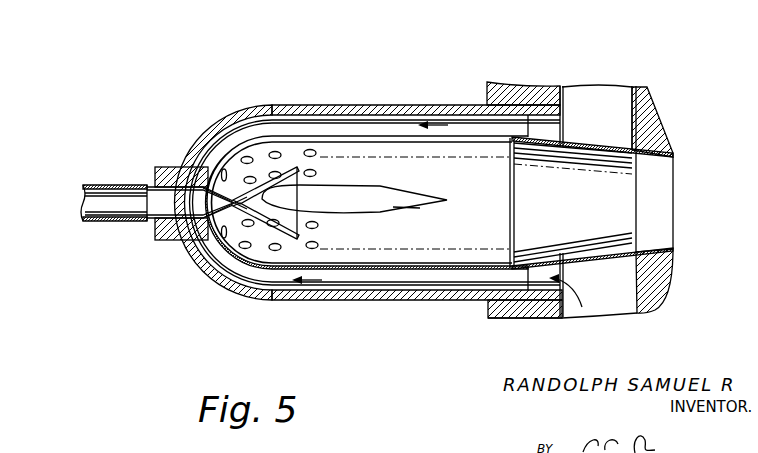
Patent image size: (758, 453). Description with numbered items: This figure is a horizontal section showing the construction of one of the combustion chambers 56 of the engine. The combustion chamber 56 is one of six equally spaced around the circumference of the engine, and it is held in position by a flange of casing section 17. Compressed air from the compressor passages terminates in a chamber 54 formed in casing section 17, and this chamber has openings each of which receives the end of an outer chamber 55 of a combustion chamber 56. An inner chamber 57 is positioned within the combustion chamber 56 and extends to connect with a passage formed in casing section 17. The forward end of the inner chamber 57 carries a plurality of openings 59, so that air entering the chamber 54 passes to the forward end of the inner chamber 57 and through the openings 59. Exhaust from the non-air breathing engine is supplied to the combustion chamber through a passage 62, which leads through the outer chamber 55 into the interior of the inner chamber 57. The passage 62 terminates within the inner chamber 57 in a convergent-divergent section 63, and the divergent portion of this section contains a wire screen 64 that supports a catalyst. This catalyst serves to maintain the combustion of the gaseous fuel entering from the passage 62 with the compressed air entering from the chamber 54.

The casing section 17 is at (502, 76).
The chamber 54 is at (580, 95).
The outer chamber 55 is at (332, 105).
The combustion chamber 56 is at (223, 110).
The inner chamber 57 is at (452, 141).
The openings 59 is at (317, 172).
The passage 62 is at (113, 187).
The convergent-divergent section 63 is at (232, 203).
The wire screen 64 is at (262, 198).